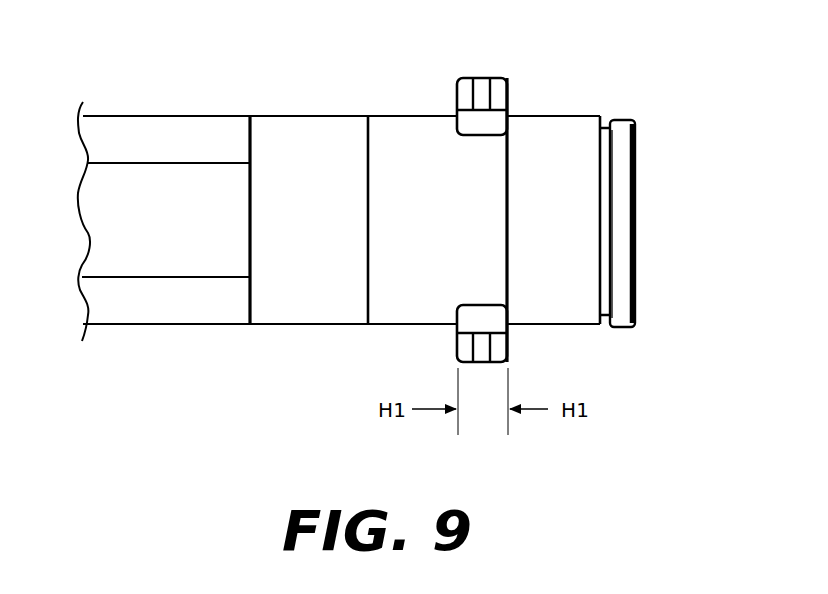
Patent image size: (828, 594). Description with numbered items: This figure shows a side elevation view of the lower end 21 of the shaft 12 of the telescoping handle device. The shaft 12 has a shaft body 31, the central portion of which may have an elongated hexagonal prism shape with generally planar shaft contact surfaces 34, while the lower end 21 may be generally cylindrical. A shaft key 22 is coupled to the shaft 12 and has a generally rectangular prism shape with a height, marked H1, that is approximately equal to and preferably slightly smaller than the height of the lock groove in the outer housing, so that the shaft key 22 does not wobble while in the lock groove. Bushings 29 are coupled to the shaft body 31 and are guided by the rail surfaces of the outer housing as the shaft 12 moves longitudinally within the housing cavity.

The shaft 12 is at (328, 74).
The lower end 21 is at (605, 87).
The shaft key 22 is at (483, 98).
The bushing 29 is at (320, 302).
The shaft body 31 is at (622, 222).
The shaft contact surface 34 is at (152, 139).